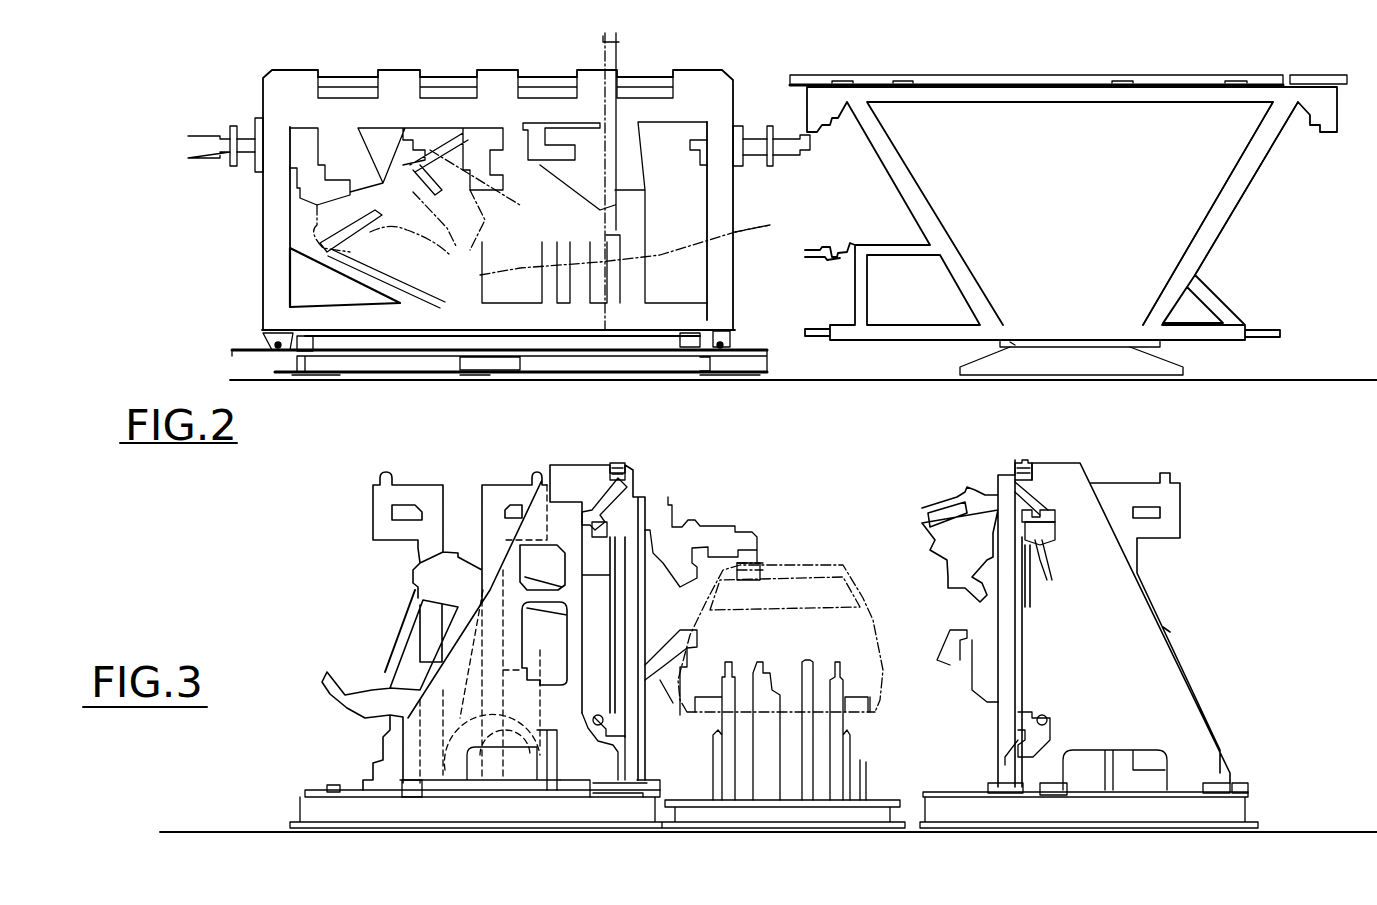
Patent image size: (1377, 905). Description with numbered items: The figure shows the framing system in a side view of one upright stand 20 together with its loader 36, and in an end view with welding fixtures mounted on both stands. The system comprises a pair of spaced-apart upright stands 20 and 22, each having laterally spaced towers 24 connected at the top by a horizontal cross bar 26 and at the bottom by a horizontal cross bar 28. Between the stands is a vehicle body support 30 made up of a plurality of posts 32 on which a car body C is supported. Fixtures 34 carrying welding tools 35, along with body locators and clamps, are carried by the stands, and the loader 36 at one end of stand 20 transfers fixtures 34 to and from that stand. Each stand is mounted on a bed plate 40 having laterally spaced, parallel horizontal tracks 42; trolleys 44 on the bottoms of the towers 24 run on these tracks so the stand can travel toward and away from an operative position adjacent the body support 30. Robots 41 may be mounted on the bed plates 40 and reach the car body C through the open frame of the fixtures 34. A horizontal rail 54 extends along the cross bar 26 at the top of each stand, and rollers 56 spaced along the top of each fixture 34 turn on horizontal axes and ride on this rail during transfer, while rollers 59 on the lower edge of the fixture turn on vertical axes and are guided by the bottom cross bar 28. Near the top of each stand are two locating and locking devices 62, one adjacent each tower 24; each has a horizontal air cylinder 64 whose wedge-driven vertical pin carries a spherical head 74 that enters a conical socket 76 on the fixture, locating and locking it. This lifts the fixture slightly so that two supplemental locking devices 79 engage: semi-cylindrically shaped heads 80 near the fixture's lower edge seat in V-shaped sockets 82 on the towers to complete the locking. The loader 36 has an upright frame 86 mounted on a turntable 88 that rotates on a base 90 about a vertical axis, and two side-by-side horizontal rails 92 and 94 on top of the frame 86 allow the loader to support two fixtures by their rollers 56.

In FIG. 2, the upright stand 20 is at (310, 64).
In FIG. 3, the upright stand 22 is at (558, 463).
In FIG. 3, the tower 24 is at (425, 712).
In FIG. 2, the horizontal cross bar 26 is at (540, 102).
In FIG. 2, the horizontal cross bar 28 is at (368, 322).
In FIG. 3, the horizontal cross bar 28 is at (618, 792).
In FIG. 3, the vehicle body support 30 is at (767, 778).
In FIG. 3, the post 32 is at (838, 770).
In FIG. 3, the fixture 34 is at (635, 725).
In FIG. 3, the welding tool 35 is at (700, 632).
In FIG. 2, the loader 36 is at (1262, 206).
In FIG. 2, the bed plate 40 is at (638, 362).
In FIG. 3, the bed plate 40 is at (302, 810).
In FIG. 3, the robot 41 is at (407, 623).
In FIG. 2, the track 42 is at (278, 350).
In FIG. 3, the track 42 is at (330, 785).
In FIG. 2, the trolley 44 is at (265, 340).
In FIG. 3, the trolley 44 is at (412, 793).
In FIG. 2, the horizontal rail 54 is at (456, 80).
In FIG. 3, the horizontal rail 54 is at (605, 507).
In FIG. 3, the roller 56 is at (614, 470).
In FIG. 3, the roller 59 is at (645, 795).
In FIG. 2, the locating and locking device 62 is at (213, 128).
In FIG. 3, the locating and locking device 62 is at (578, 535).
In FIG. 2, the air cylinder 64 is at (190, 147).
In FIG. 3, the spherical head 74 is at (605, 530).
In FIG. 3, the conical socket 76 is at (605, 517).
In FIG. 3, the supplemental locking device 79 is at (583, 712).
In FIG. 3, the semi-cylindrically shaped head 80 is at (620, 745).
In FIG. 3, the V-shaped socket 82 is at (600, 718).
In FIG. 2, the upright frame 86 is at (1270, 163).
In FIG. 2, the turntable 88 is at (1073, 340).
In FIG. 2, the base 90 is at (1043, 365).
In FIG. 2, the horizontal rail 92 is at (1323, 74).
In FIG. 2, the horizontal rail 94 is at (1177, 74).
In FIG. 2, the car body C is at (772, 214).
In FIG. 3, the car body C is at (812, 563).